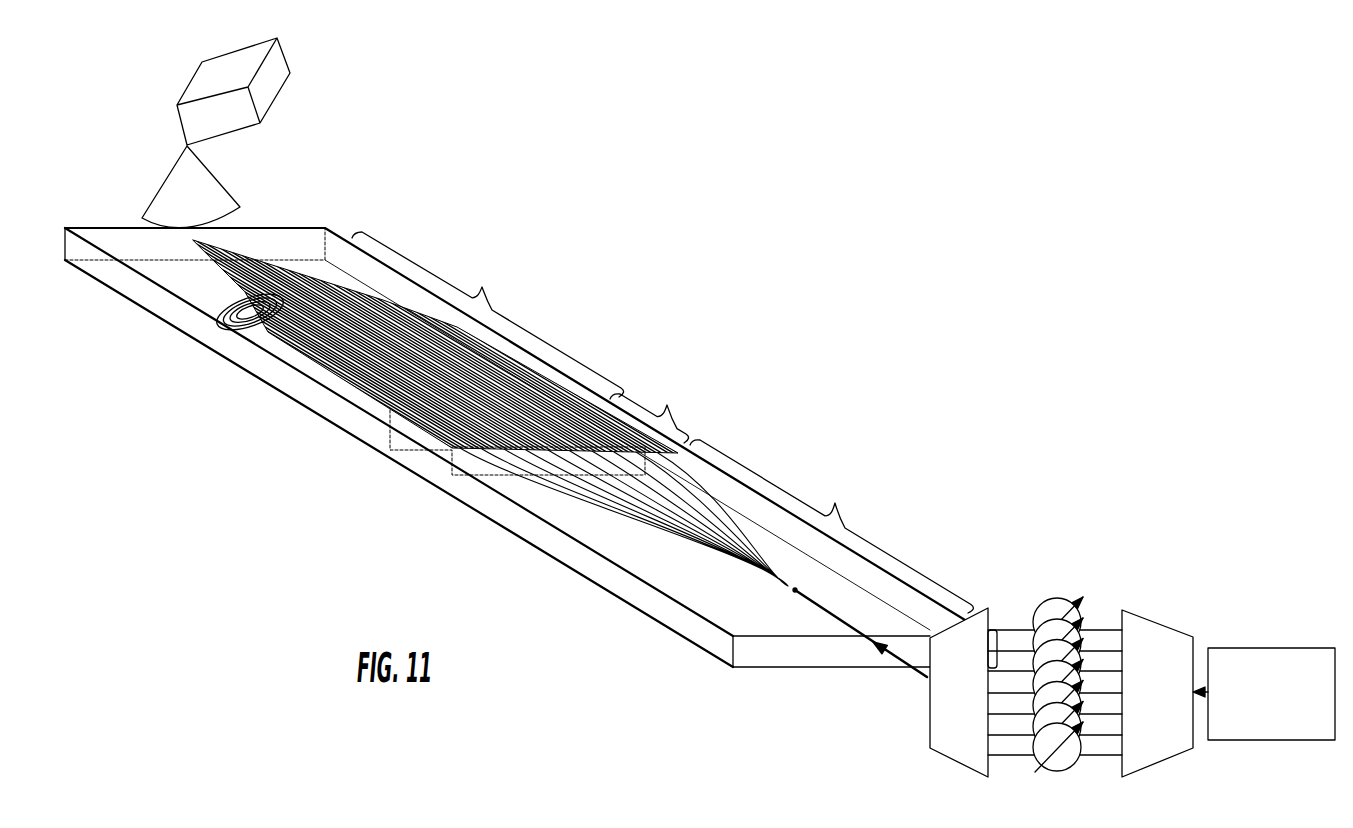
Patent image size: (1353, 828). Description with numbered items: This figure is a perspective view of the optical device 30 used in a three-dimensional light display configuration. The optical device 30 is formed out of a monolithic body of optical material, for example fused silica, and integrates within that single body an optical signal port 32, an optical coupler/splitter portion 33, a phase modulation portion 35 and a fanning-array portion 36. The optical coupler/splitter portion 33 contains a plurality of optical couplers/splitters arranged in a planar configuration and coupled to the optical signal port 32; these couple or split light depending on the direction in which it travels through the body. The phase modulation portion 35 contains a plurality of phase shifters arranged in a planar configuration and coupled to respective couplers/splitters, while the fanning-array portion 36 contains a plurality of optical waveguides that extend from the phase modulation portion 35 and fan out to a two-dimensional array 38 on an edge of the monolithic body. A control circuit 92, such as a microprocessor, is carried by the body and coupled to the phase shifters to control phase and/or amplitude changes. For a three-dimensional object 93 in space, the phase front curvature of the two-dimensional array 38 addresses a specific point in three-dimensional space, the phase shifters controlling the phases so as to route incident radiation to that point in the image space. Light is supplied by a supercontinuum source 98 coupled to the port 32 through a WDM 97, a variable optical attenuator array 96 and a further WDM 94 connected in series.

The optical device 30 is at (798, 275).
The optical signal port 32 is at (863, 678).
The optical coupler/splitter portion 33 is at (831, 526).
The phase modulation portion 35 is at (649, 411).
The fanning-array portion 36 is at (488, 314).
The two-dimensional array 38 is at (126, 214).
The control circuit 92 is at (406, 432).
The 3D object 93 is at (288, 63).
The WDM 94 is at (933, 753).
The Variable Optical Attenuator (VOA) array 96 is at (1070, 578).
The WDM 97 is at (1165, 623).
The supercontinuum source 98 is at (1273, 647).